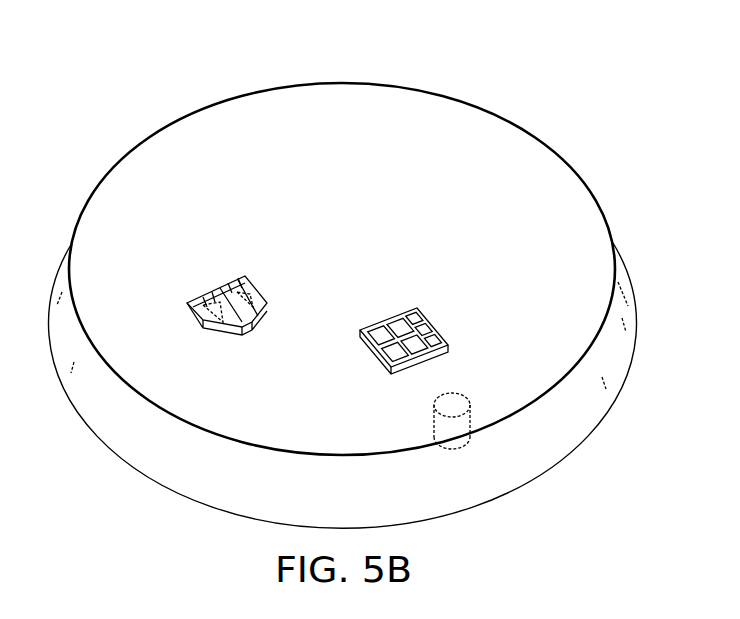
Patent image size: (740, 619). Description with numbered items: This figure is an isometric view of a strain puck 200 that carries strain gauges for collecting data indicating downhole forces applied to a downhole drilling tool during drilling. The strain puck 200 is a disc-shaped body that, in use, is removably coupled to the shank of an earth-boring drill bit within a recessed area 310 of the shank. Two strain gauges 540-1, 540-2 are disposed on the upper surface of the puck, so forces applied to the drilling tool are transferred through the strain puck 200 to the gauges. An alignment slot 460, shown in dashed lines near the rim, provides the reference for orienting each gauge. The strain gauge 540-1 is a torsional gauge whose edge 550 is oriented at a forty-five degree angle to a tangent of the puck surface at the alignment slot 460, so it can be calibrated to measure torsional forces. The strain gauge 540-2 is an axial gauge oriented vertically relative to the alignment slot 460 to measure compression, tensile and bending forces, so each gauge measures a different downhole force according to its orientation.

The strain puck 200 is at (493, 115).
The recessed area 310 is at (192, 90).
The strain gauge 540-1 is at (215, 272).
The strain gauge 540-2 is at (385, 302).
The edge 550 is at (224, 338).
The alignment slot 460 is at (431, 424).